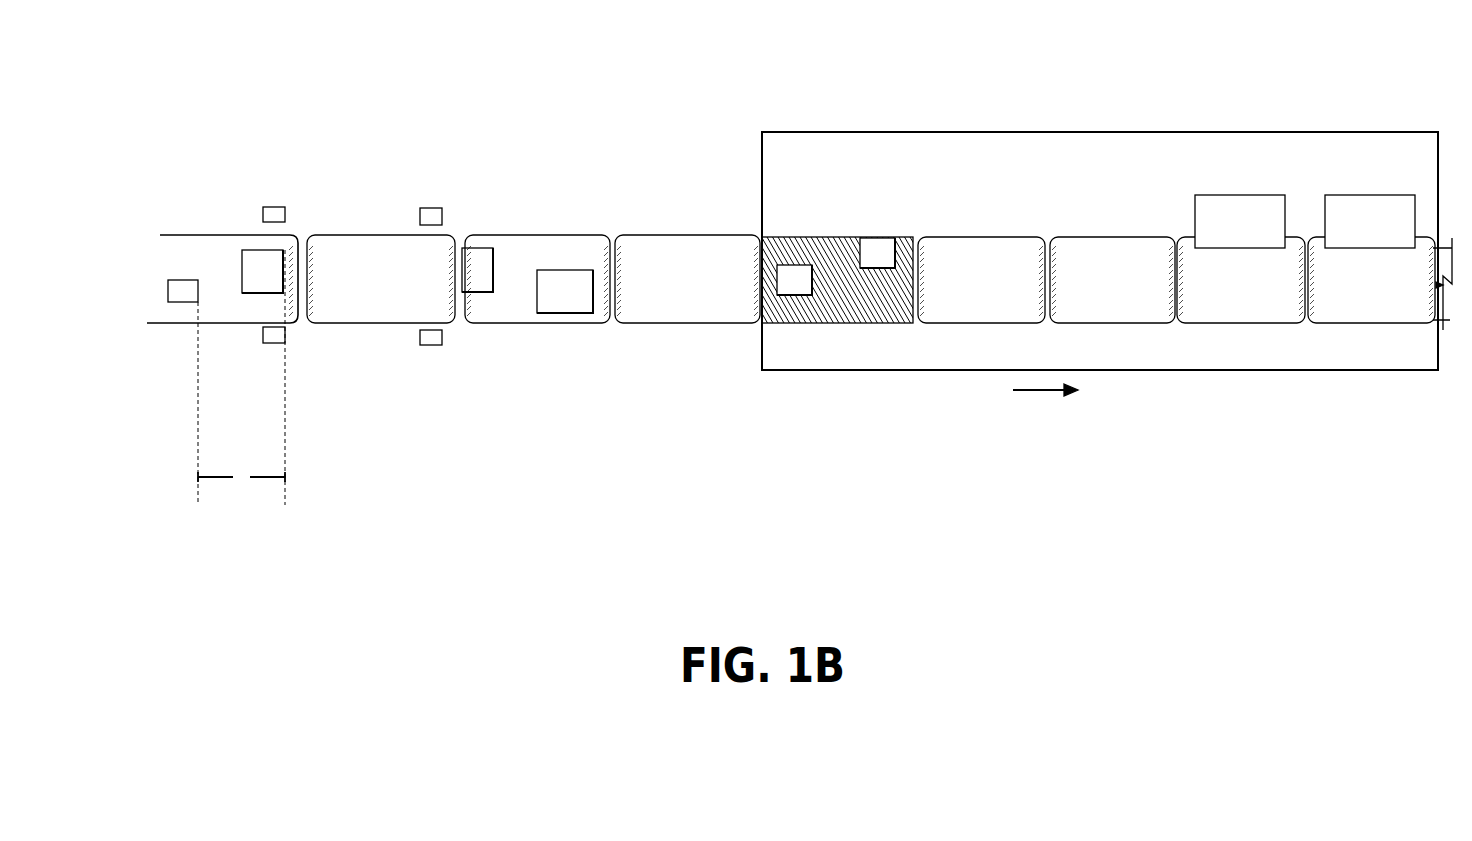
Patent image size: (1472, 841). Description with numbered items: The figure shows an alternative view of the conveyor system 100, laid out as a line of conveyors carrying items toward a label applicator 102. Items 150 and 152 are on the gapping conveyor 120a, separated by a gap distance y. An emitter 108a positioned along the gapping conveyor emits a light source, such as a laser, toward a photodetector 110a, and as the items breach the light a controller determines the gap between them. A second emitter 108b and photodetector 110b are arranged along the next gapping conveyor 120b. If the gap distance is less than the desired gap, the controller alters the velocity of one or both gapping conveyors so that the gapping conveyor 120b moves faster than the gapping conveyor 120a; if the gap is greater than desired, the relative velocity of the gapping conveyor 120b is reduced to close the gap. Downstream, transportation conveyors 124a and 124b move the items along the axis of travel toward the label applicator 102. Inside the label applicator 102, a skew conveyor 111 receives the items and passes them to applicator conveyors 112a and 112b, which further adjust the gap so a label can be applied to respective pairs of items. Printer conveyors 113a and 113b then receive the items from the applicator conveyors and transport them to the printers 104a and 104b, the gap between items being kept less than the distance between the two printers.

The conveyor system 100 is at (1160, 68).
The label applicator 102 is at (1195, 162).
The printer 104a is at (1240, 221).
The printer 104b is at (1370, 221).
The emitter 108a is at (265, 212).
The emitter 108b is at (432, 208).
The photodetector 110a is at (265, 340).
The photodetector 110b is at (443, 343).
The skew conveyor 111 is at (805, 325).
The applicator conveyor 112a is at (945, 325).
The applicator conveyor 112b is at (1072, 325).
The printer conveyor 113a is at (1222, 325).
The printer conveyor 113b is at (1350, 325).
The gapping conveyor 120a is at (170, 258).
The gapping conveyor 120b is at (381, 279).
The transportation conveyor 124a is at (536, 279).
The transportation conveyor 124b is at (687, 279).
The item 150 is at (265, 250).
The item 152 is at (183, 302).